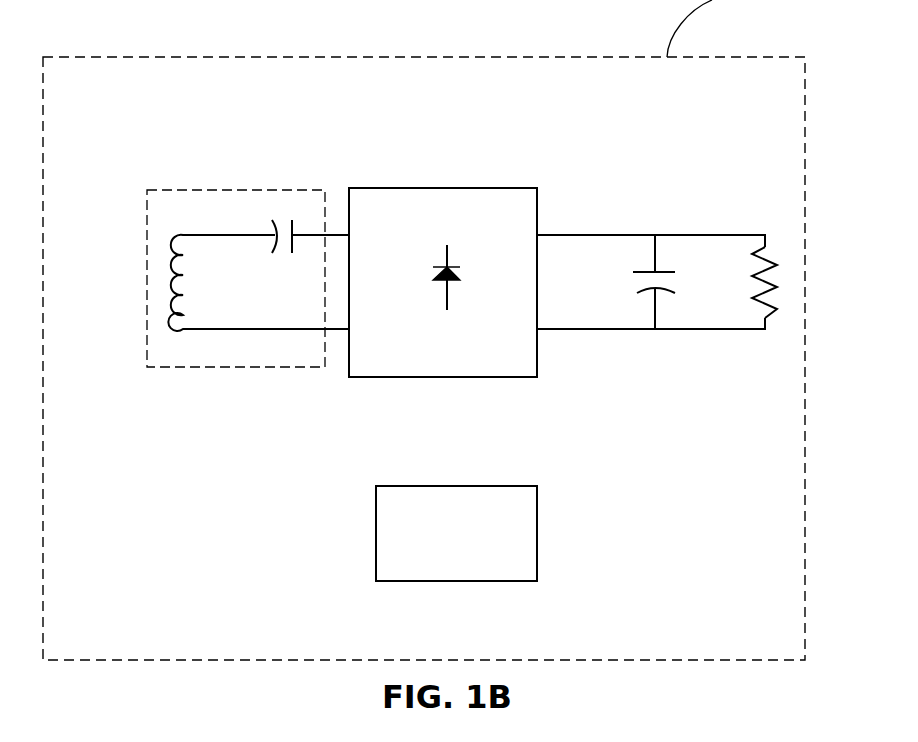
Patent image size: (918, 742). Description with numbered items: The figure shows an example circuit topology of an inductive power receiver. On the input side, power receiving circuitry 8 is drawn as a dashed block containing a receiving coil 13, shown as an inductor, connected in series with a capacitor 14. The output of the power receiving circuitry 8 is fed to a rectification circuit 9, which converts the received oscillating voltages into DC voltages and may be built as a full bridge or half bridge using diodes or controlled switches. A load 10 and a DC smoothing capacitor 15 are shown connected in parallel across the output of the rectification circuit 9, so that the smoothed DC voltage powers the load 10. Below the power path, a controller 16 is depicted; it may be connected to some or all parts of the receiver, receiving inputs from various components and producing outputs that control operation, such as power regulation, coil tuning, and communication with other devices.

The power receiving circuitry 8 is at (149, 343).
The rectification circuit 9 is at (433, 188).
The load 10 is at (777, 309).
The receiving coil 13 is at (172, 256).
The capacitor 14 is at (292, 220).
The DC smoothing capacitor 15 is at (675, 291).
The controller 16 is at (456, 533).